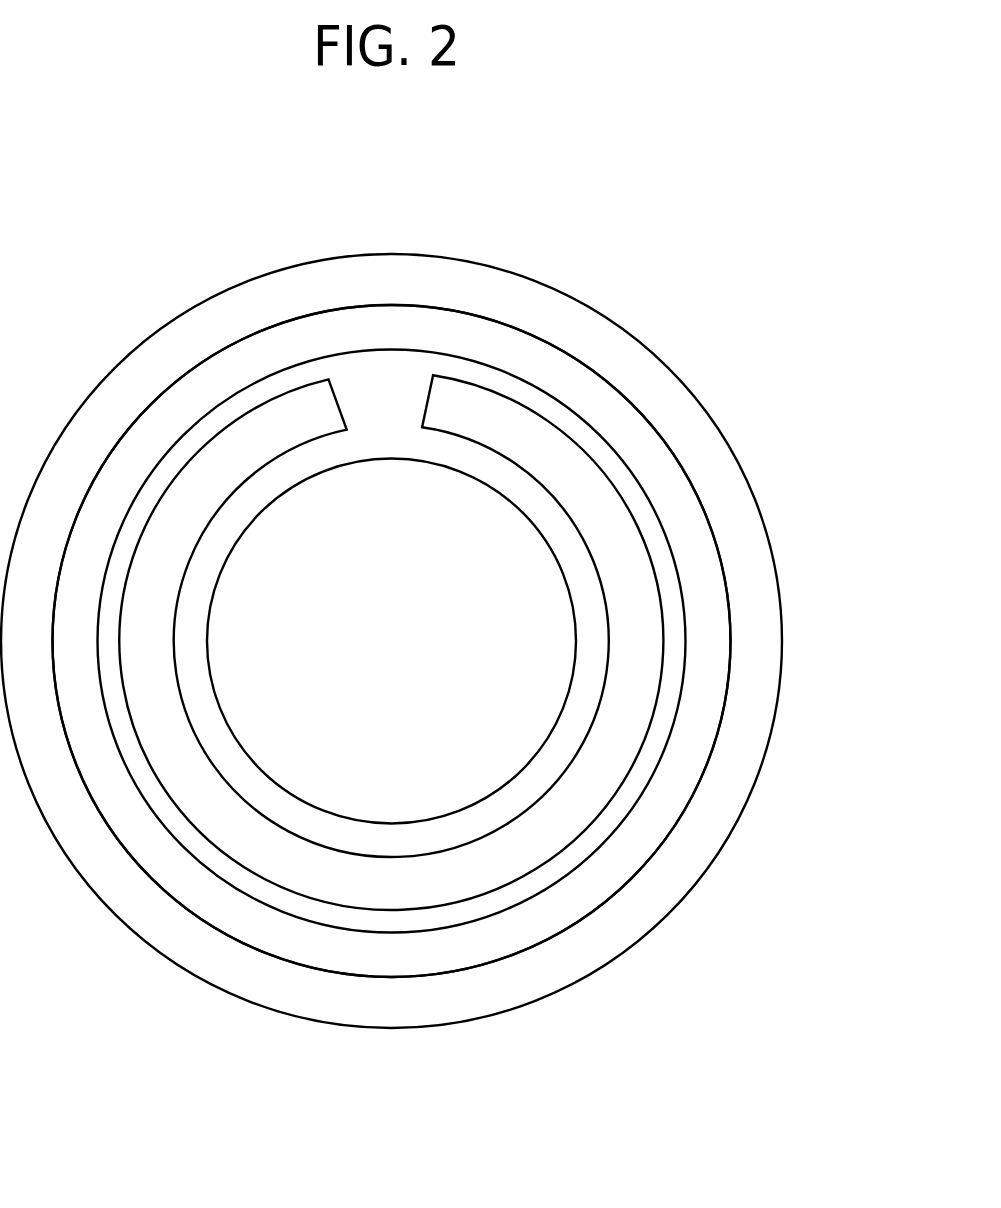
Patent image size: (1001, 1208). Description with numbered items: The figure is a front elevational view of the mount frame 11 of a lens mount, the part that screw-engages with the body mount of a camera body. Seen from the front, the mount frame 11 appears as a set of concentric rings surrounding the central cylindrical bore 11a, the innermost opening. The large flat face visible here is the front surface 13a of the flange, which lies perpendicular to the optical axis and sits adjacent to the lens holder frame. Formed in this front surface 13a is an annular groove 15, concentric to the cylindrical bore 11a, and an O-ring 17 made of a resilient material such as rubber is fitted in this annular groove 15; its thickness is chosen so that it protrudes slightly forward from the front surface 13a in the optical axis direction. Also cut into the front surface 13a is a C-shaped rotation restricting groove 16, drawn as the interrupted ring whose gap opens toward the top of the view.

The mount frame 11 is at (548, 272).
The cylindrical bore 11a is at (575, 600).
The front surface 13a is at (743, 502).
The annular groove 15 is at (646, 427).
The C-shaped rotation restricting groove 16 is at (628, 509).
The O-ring 17 is at (588, 388).